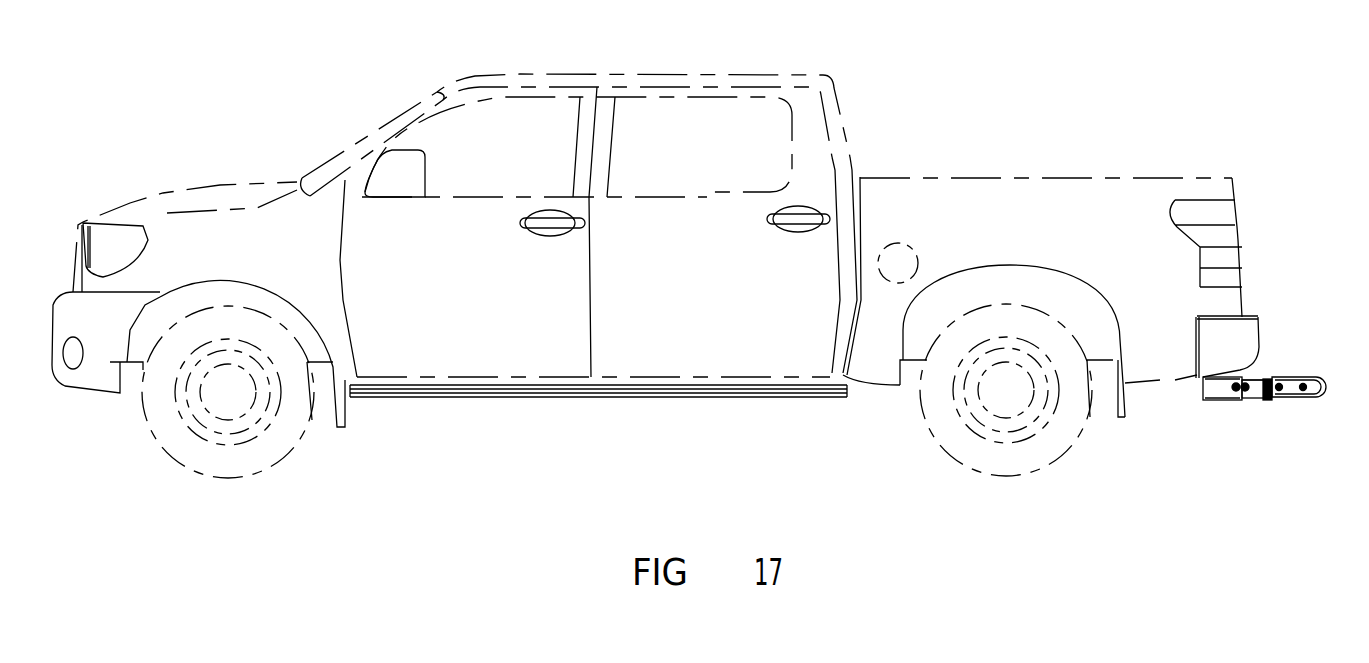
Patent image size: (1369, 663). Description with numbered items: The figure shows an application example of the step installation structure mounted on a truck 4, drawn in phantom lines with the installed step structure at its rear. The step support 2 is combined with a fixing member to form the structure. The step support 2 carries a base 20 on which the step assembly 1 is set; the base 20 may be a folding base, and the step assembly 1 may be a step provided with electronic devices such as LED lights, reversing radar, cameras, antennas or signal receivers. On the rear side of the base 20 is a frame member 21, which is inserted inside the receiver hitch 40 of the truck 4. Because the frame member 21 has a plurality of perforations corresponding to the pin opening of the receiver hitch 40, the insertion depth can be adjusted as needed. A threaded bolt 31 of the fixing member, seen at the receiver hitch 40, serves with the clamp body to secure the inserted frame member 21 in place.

The step assembly 1 is at (1295, 377).
The step support 2 is at (1253, 398).
The truck 4 is at (1070, 190).
The base 20 is at (1268, 398).
The frame member 21 is at (1260, 378).
The threaded bolt 31 is at (1238, 386).
The receiver hitch 40 is at (1212, 390).